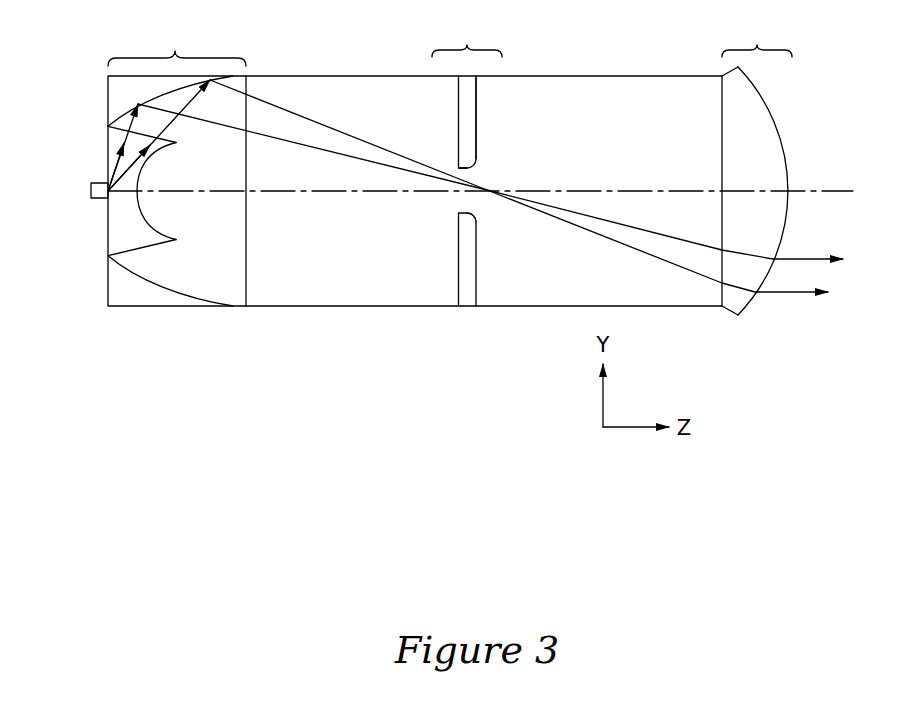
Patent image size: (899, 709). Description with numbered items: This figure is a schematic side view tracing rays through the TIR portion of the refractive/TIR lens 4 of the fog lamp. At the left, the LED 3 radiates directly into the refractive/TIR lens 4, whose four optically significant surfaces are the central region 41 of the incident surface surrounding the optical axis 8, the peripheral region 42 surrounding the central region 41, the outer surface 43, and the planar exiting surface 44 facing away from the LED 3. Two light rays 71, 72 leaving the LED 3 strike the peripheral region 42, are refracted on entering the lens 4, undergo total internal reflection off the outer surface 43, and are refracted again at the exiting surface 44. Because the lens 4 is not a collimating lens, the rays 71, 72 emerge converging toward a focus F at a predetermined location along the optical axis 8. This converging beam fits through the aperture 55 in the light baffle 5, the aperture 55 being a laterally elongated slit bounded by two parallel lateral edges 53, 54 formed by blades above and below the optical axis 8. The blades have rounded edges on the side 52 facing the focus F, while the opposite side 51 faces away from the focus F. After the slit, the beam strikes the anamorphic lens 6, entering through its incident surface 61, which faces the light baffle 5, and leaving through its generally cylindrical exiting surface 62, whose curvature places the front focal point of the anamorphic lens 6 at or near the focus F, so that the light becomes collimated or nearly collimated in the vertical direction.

The LED 3 is at (91, 190).
The refractive/TIR lens 4 is at (177, 45).
The central region 41 is at (150, 215).
The peripheral region 42 is at (116, 131).
The outer surface 43 is at (130, 108).
The exiting surface 44 is at (246, 238).
The light baffle 5 is at (467, 39).
The opposite side 51 is at (458, 118).
The side facing the foci 52 is at (477, 118).
The lateral edge 53 is at (452, 167).
The lateral edge 54 is at (458, 212).
The aperture 55 is at (465, 173).
The anamorphic lens 6 is at (757, 168).
The incident surface 61 is at (722, 130).
The exiting surface 62 is at (770, 108).
The light ray 71 is at (315, 121).
The light ray 72 is at (323, 149).
The optical axis 8 is at (671, 191).
The focus F is at (489, 193).